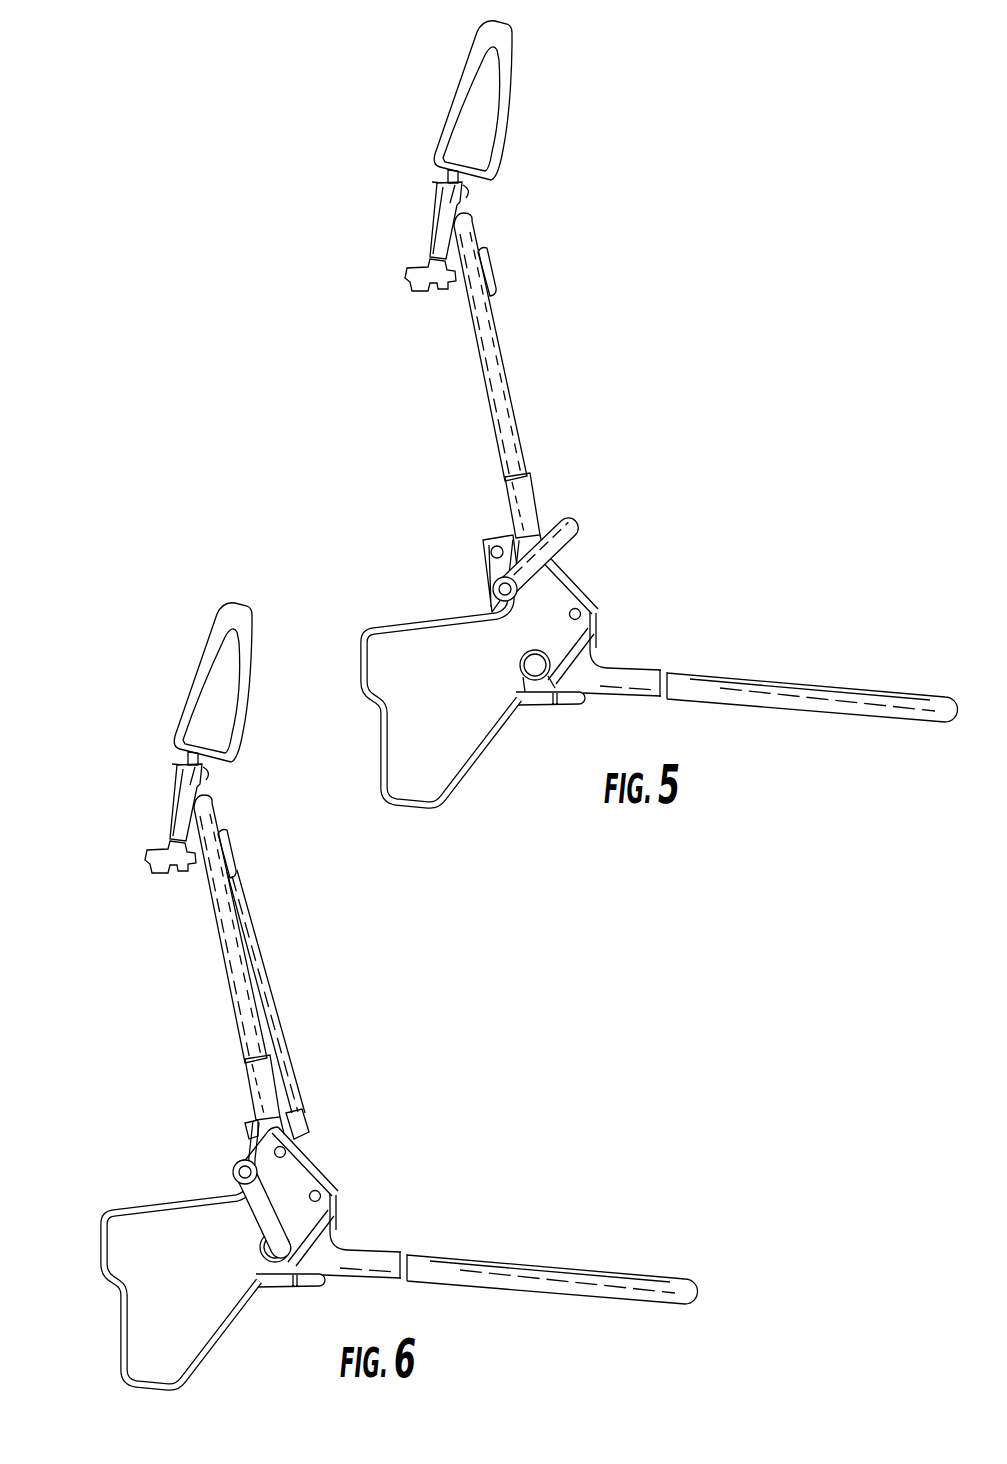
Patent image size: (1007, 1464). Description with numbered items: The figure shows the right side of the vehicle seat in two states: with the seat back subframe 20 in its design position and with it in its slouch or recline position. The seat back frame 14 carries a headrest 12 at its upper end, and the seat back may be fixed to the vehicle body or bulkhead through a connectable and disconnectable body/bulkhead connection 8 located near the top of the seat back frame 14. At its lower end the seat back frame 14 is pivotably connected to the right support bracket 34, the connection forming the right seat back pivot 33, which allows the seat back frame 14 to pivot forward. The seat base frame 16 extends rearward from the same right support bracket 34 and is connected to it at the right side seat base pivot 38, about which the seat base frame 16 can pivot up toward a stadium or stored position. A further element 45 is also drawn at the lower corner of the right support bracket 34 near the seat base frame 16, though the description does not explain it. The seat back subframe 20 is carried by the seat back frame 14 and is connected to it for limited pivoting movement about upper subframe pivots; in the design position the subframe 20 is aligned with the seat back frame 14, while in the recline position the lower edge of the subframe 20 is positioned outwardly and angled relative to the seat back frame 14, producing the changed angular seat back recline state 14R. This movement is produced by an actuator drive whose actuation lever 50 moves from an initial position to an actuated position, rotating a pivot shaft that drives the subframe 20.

In FIG. 5, the body/bulkhead connection 8 is at (414, 267).
In FIG. 6, the body/bulkhead connection 8 is at (138, 842).
In FIG. 5, the headrest 12 is at (480, 117).
In FIG. 6, the headrest 12 is at (188, 684).
In FIG. 5, the seat back frame 14 is at (505, 390).
In FIG. 6, the seat back frame 14 is at (198, 964).
In FIG. 6, the seat back recline state 14R is at (242, 967).
In FIG. 5, the seat base frame 16 is at (907, 697).
In FIG. 6, the seat base frame 16 is at (510, 1247).
In FIG. 6, the seat back subframe 20 is at (283, 1087).
In FIG. 6, the right seat back pivot 33 is at (288, 1151).
In FIG. 5, the right support bracket 34 is at (433, 661).
In FIG. 6, the right support bracket 34 is at (151, 1254).
In FIG. 5, the right side seat base pivot 38 is at (589, 611).
In FIG. 6, the right side seat base pivot 38 is at (328, 1207).
In FIG. 5, the bushing 45 is at (524, 697).
In FIG. 6, the bushing 45 is at (275, 1247).
In FIG. 5, the actuation lever 50 is at (578, 521).
In FIG. 6, the actuation lever 50 is at (240, 1186).